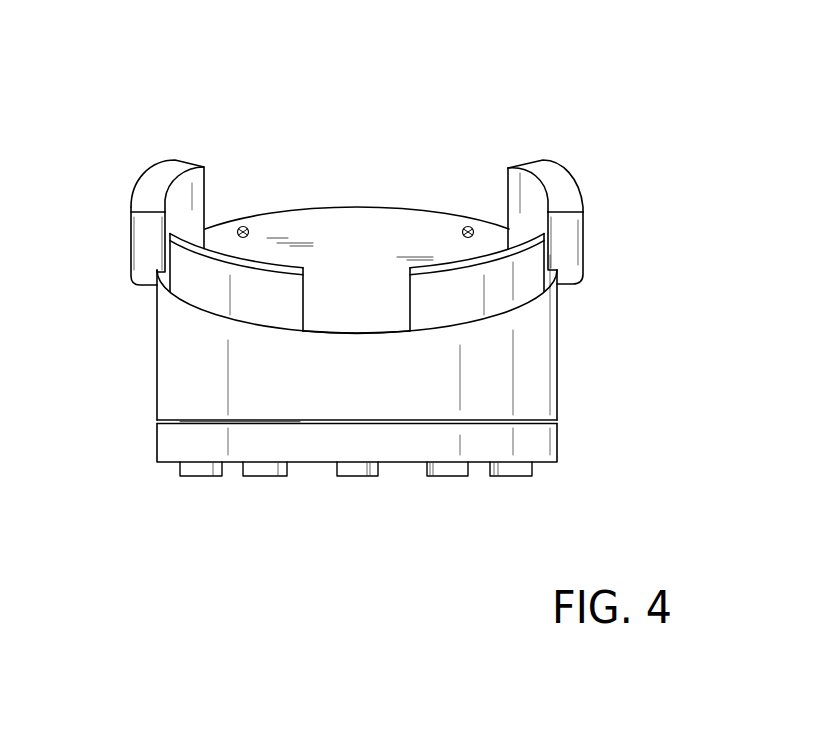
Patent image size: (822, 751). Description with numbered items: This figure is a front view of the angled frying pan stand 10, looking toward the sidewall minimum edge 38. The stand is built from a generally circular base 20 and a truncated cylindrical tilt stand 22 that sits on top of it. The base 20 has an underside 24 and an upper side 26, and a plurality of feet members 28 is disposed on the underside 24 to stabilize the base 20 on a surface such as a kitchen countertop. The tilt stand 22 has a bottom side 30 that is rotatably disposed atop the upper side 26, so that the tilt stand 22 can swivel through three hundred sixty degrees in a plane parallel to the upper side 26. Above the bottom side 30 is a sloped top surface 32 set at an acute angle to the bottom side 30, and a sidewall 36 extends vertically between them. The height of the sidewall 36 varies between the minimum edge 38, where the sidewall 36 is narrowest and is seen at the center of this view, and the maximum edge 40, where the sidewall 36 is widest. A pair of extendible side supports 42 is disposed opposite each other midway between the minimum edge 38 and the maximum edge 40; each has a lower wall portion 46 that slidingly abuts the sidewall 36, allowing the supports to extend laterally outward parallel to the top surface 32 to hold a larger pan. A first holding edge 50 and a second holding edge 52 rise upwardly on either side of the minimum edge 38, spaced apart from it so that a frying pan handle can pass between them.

The angled frying pan stand 10 is at (601, 99).
The base 20 is at (170, 442).
The tilt stand 22 is at (183, 370).
The underside 24 is at (230, 467).
The upper side 26 is at (273, 418).
The feet members 28 is at (432, 471).
The bottom side 30 is at (223, 422).
The top surface 32 is at (325, 260).
The sidewall 36 is at (500, 375).
The minimum edge 38 is at (358, 331).
The maximum edge 40 is at (332, 204).
The extendible side supports 42 is at (147, 193).
The lower wall portion 46 is at (138, 273).
The first holding edge 50 is at (210, 297).
The second holding edge 52 is at (497, 313).